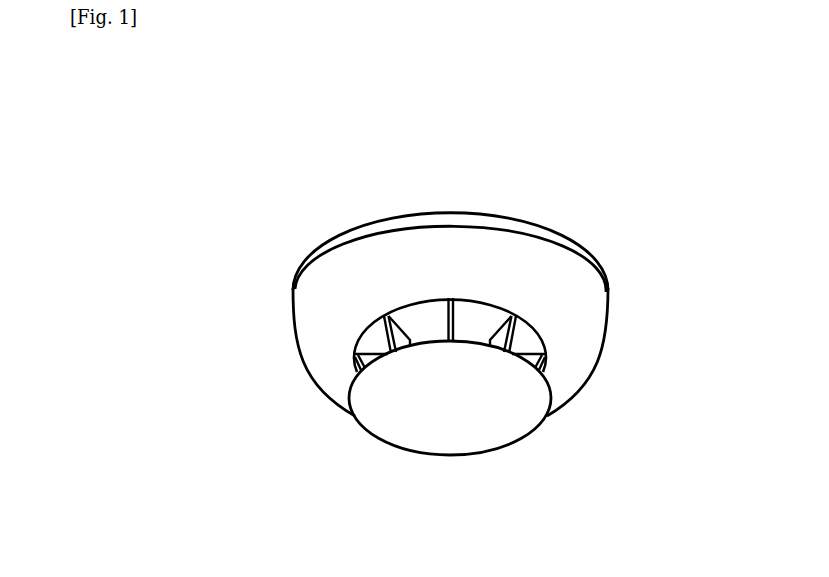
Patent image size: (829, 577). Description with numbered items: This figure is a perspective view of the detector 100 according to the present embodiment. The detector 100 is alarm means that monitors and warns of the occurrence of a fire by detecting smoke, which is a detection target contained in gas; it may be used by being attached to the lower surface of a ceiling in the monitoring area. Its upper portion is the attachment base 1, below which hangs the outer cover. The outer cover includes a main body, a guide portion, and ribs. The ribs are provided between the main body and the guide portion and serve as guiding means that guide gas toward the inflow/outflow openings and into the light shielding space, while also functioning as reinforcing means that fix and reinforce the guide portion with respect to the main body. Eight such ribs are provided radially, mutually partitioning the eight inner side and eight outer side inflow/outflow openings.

The detector 100 is at (300, 447).
The attachment base 1 is at (553, 238).